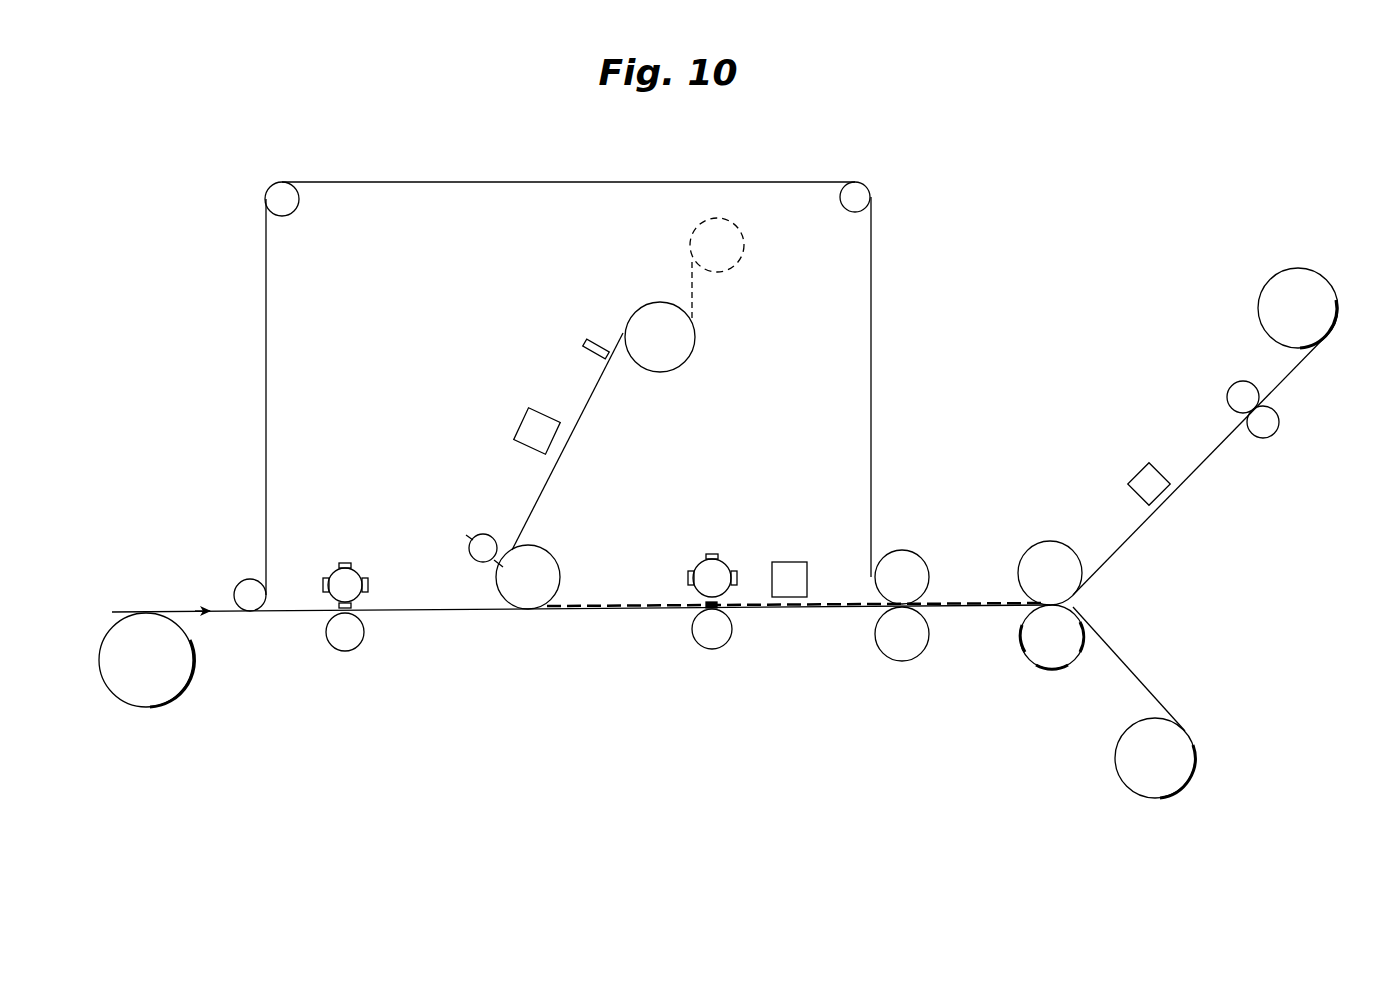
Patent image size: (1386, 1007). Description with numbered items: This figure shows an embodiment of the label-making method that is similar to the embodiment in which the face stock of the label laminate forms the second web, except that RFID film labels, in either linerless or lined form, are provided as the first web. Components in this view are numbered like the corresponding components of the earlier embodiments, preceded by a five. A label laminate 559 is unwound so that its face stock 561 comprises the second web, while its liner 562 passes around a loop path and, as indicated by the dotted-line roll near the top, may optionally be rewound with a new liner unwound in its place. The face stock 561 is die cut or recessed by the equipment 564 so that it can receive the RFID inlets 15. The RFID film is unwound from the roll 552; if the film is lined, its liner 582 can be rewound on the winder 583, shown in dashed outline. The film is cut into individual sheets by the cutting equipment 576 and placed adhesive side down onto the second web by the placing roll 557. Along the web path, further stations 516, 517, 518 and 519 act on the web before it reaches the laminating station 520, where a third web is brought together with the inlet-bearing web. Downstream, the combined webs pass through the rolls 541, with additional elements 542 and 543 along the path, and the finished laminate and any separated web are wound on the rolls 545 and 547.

The RFID inlet 15 is at (587, 607).
The coating equipment 516 is at (508, 456).
The sensor 517 is at (576, 355).
The printing station 518 is at (735, 655).
The dryer 519 is at (788, 540).
The laminating station 520 is at (919, 533).
The laminating rollers 541 is at (1031, 672).
The applicator 542 is at (1125, 468).
The guide rollers 543 is at (1215, 376).
The take-up roll 545 is at (1277, 293).
The take-up roll 547 is at (1170, 743).
The roll of first web 552 is at (678, 363).
The placing roll 557 is at (557, 558).
The label laminate 559 is at (122, 613).
The face stock 561 is at (420, 612).
The liner 562 is at (263, 285).
The die cutting or recessing equipment 564 is at (305, 556).
The cutting equipment 576 is at (452, 550).
The liner 582 is at (693, 292).
The winder 583 is at (722, 257).